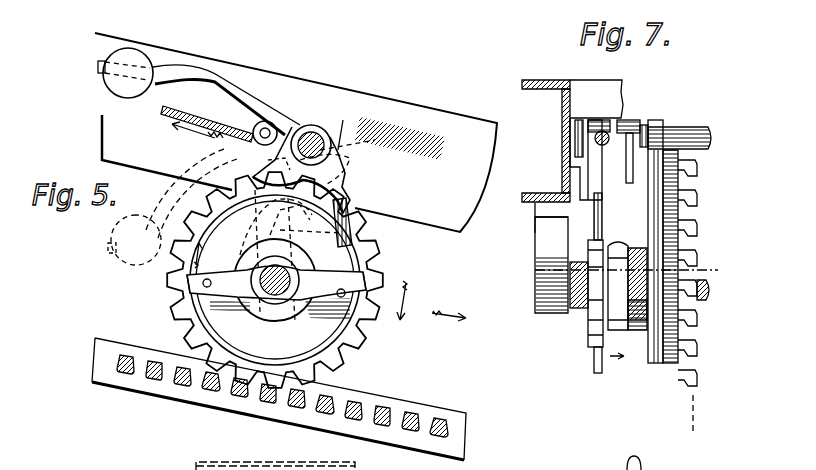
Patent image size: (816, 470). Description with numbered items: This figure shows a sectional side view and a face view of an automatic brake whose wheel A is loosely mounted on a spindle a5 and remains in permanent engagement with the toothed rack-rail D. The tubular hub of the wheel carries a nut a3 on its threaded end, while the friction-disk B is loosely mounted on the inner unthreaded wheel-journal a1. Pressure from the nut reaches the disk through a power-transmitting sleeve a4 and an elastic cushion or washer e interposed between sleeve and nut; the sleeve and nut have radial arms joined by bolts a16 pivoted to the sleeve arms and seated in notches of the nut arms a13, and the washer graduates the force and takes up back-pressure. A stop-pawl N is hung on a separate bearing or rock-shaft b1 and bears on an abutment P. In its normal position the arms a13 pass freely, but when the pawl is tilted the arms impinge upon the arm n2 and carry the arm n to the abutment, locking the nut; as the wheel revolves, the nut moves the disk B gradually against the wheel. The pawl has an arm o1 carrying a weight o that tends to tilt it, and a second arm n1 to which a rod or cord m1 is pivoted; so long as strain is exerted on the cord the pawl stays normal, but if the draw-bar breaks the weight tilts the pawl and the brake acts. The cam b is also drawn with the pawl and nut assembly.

In FIG. 5, the weight o is at (113, 84).
In FIG. 5, the arm o1 is at (236, 82).
In FIG. 5, the rod or cord m1 is at (165, 110).
In FIG. 5, the arm n1 is at (257, 123).
In FIG. 7, the arm n1 is at (629, 176).
In FIG. 5, the separate bearing or rock-shaft b1 is at (312, 126).
In FIG. 7, the separate bearing or rock-shaft b1 is at (690, 132).
In FIG. 5, the stop-pawl N is at (340, 125).
In FIG. 5, the arm n is at (348, 188).
In FIG. 7, the arm n is at (592, 173).
In FIG. 5, the arm n2 is at (279, 165).
In FIG. 5, the abutment P is at (398, 146).
In FIG. 7, the abutment P is at (596, 99).
In FIG. 5, the cam b is at (275, 260).
In FIG. 7, the cam b is at (657, 124).
In FIG. 5, the nut a3 is at (262, 268).
In FIG. 7, the nut a3 is at (593, 240).
In FIG. 5, the bolt a16 is at (274, 283).
In FIG. 5, the radial arm a13 is at (190, 283).
In FIG. 7, the radial arm a13 is at (600, 198).
In FIG. 5, the spindle a5 is at (268, 302).
In FIG. 7, the spindle a5 is at (704, 292).
In FIG. 5, the friction-disk B is at (275, 280).
In FIG. 7, the friction-disk B is at (656, 352).
In FIG. 5, the wheel A is at (352, 338).
In FIG. 7, the wheel A is at (680, 355).
In FIG. 5, the rack D is at (384, 413).
In FIG. 7, the elastic cushion or washer e is at (618, 243).
In FIG. 7, the wheel-journal a1 is at (578, 300).
In FIG. 7, the power-transmitting sleeve a4 is at (630, 322).